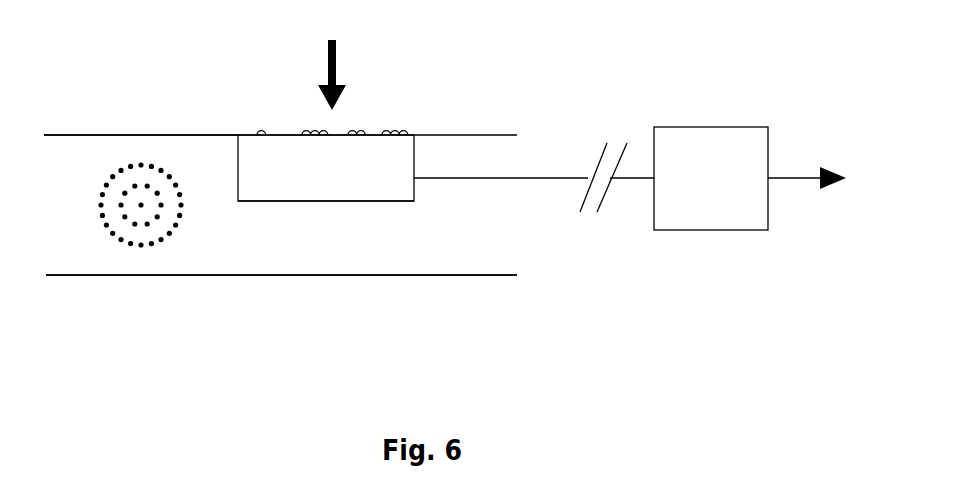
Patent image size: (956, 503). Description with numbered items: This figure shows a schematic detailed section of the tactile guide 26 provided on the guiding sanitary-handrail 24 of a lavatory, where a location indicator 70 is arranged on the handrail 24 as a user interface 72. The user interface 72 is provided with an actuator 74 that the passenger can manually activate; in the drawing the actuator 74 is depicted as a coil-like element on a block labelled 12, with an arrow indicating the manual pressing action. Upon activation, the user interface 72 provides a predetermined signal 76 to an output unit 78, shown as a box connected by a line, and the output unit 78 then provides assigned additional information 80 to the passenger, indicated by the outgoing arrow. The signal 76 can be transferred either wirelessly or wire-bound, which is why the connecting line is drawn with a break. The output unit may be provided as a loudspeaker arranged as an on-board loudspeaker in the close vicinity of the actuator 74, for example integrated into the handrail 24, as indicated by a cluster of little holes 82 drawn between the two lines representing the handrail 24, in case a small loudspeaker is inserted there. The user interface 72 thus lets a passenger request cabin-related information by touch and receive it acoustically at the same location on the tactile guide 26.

The sensor 12 is at (326, 168).
The guiding sanitary-handrail 24 is at (70, 118).
The tactile guide 26 is at (162, 118).
The location indicator 70 is at (278, 190).
The user interface 72 is at (378, 262).
The actuator 74 is at (405, 152).
The predetermined signal 76 is at (443, 179).
The output unit 78 is at (707, 125).
The assigned additional information 80 is at (807, 180).
The little holes 82 is at (141, 248).